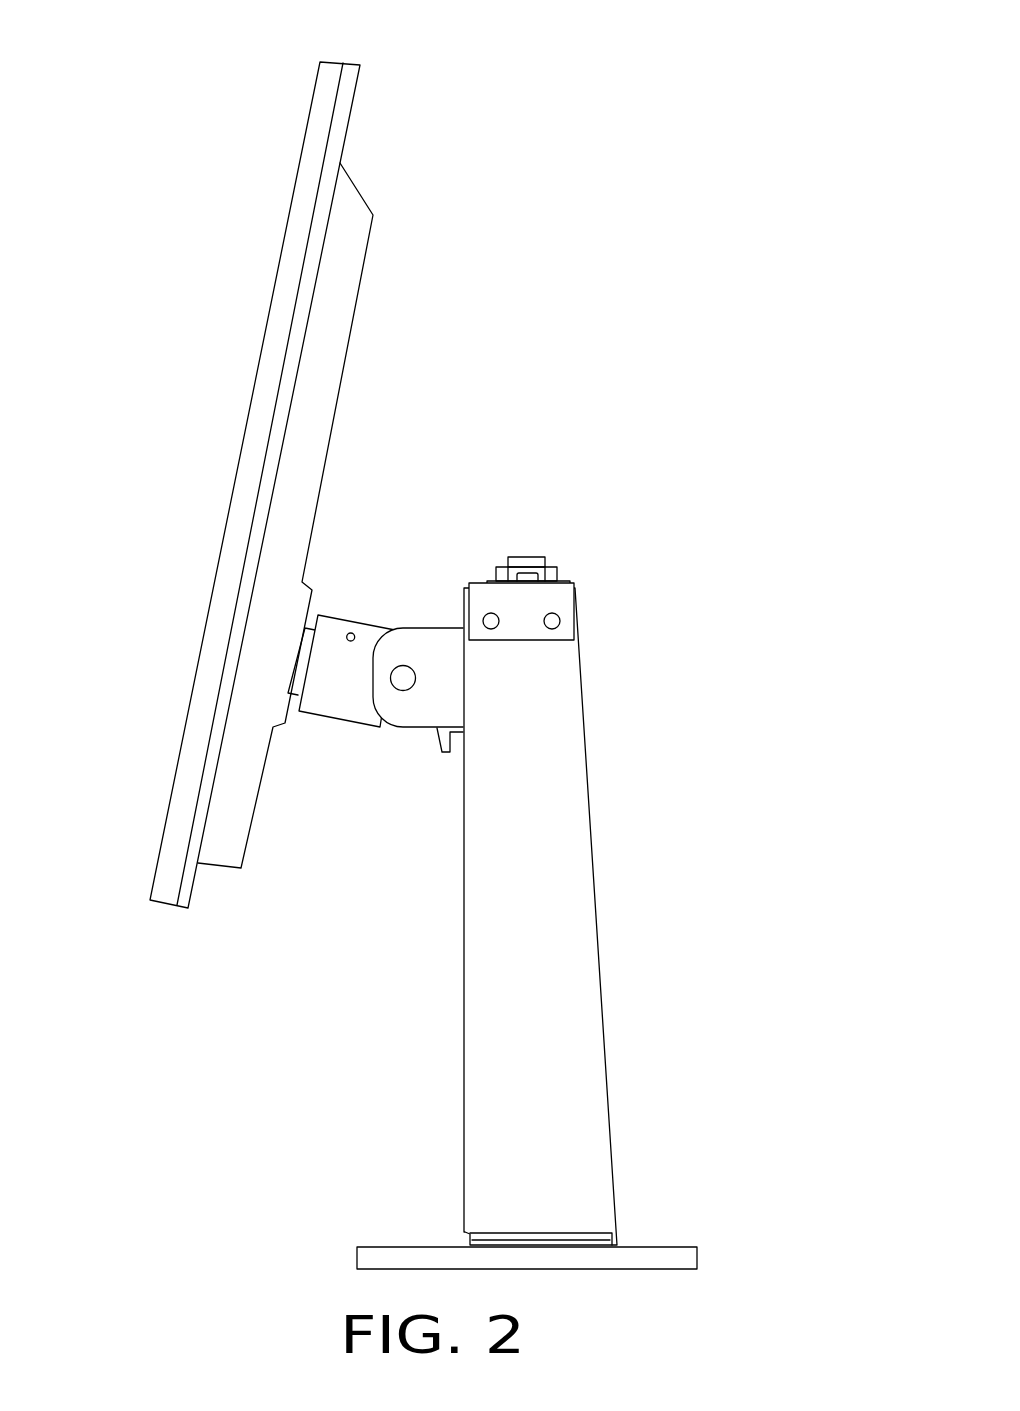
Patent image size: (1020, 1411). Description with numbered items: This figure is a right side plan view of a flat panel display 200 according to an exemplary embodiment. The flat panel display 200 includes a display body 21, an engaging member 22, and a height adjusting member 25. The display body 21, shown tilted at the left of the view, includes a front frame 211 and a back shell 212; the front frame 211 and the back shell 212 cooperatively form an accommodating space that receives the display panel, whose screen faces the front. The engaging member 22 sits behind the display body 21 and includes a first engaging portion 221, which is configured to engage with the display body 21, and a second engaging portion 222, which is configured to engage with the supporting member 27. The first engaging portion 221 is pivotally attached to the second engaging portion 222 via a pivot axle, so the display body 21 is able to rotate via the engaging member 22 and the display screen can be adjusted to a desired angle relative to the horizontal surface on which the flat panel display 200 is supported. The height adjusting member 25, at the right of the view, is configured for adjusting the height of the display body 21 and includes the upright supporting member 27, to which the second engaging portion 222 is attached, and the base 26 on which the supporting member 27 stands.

The flat panel display 200 is at (466, 33).
The display body 21 is at (404, 263).
The front frame 211 is at (302, 209).
The back shell 212 is at (348, 210).
The engaging member 22 is at (493, 521).
The first engaging portion 221 is at (331, 638).
The second engaging portion 222 is at (412, 657).
The height adjusting member 25 is at (732, 785).
The supporting member 27 is at (542, 892).
The base 26 is at (615, 1257).